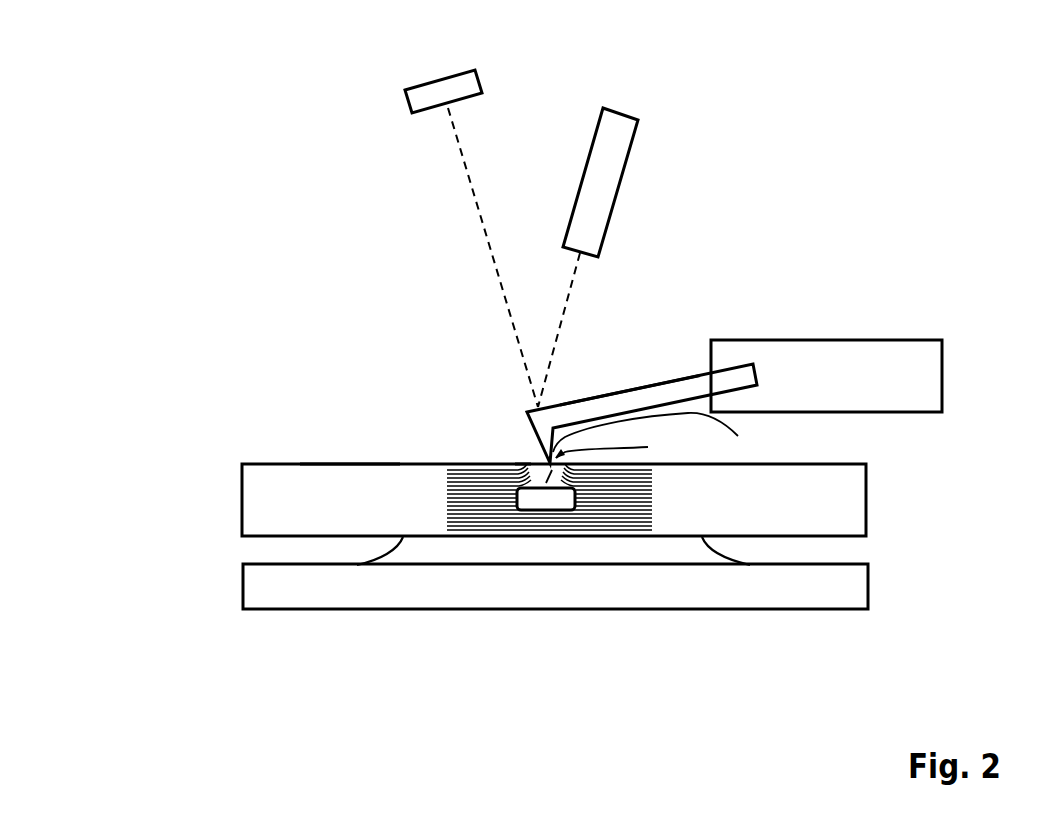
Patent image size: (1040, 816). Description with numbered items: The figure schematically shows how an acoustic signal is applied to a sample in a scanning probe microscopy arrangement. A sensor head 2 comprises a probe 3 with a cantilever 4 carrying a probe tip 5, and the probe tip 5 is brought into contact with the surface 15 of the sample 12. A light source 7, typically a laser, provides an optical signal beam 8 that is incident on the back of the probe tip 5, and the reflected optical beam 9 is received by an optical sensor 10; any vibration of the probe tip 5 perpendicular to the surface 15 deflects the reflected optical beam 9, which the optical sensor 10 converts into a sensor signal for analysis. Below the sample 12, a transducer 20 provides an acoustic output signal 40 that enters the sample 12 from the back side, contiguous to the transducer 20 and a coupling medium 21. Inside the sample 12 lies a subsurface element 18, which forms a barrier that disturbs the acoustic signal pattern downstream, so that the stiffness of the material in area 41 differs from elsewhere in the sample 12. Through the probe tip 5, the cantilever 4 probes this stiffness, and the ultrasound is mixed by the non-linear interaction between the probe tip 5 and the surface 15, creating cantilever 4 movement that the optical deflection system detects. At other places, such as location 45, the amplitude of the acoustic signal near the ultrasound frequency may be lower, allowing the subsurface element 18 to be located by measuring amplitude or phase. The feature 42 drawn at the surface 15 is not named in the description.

The sensor head 2 is at (812, 340).
The probe 3 is at (673, 381).
The cantilever 4 is at (622, 389).
The probe tip 5 is at (548, 460).
The light source 7 is at (618, 193).
The optical signal beam 8 is at (565, 313).
The reflected optical beam 9 is at (480, 221).
The optical sensor 10 is at (422, 85).
The sample 12 is at (867, 495).
The surface 15 is at (345, 463).
The subsurface element 18 is at (542, 499).
The transducer 20 is at (610, 609).
The coupling medium 21 is at (385, 552).
The acoustic output signal 40 is at (437, 488).
The area 41 is at (617, 444).
The entry point 42 is at (523, 464).
The location 45 is at (661, 434).